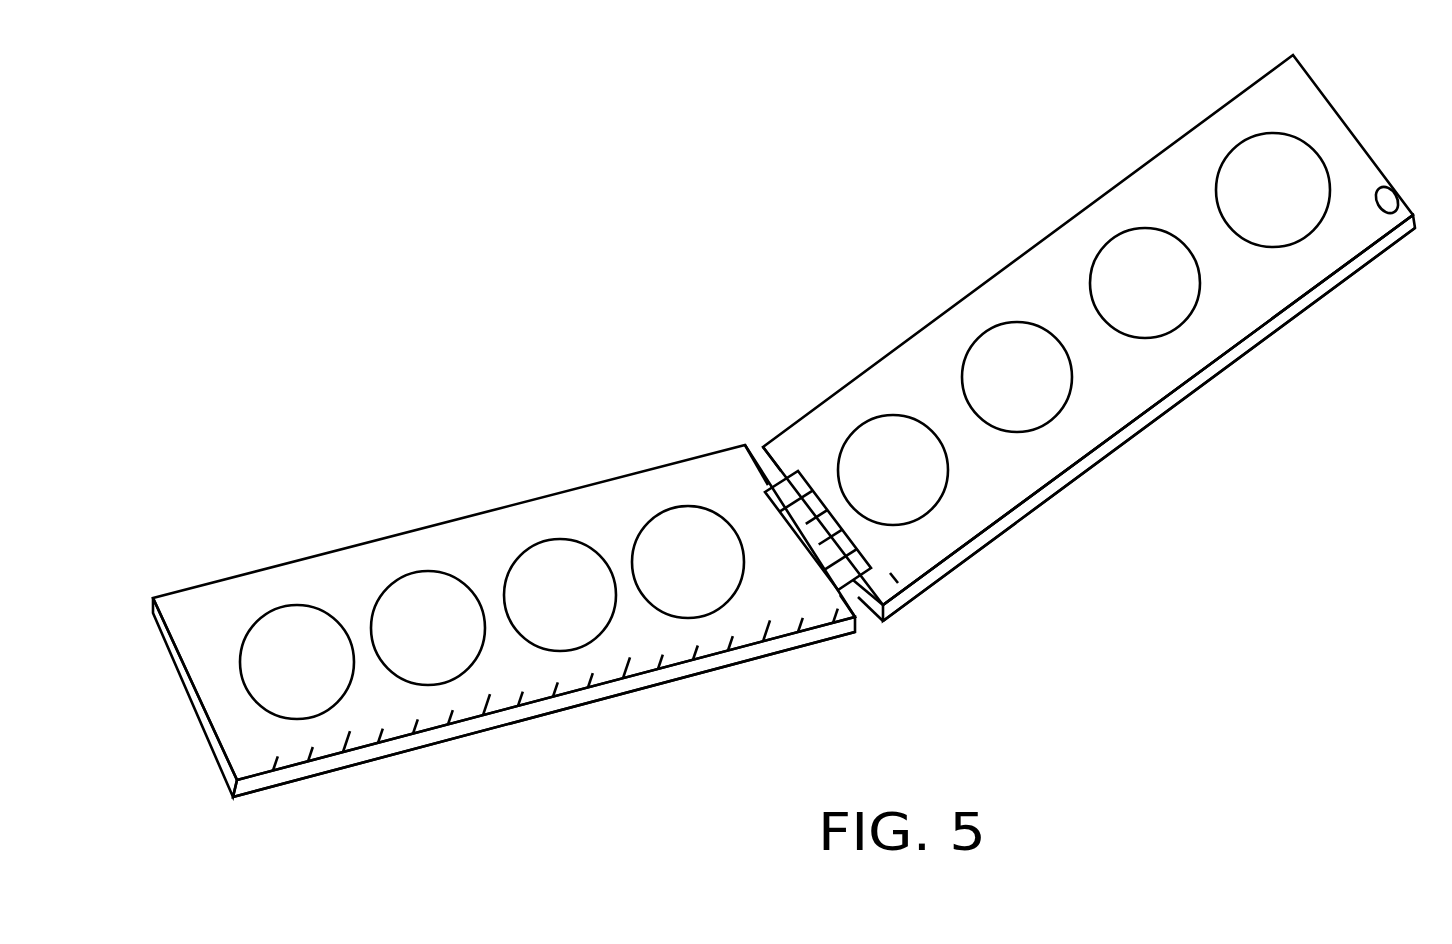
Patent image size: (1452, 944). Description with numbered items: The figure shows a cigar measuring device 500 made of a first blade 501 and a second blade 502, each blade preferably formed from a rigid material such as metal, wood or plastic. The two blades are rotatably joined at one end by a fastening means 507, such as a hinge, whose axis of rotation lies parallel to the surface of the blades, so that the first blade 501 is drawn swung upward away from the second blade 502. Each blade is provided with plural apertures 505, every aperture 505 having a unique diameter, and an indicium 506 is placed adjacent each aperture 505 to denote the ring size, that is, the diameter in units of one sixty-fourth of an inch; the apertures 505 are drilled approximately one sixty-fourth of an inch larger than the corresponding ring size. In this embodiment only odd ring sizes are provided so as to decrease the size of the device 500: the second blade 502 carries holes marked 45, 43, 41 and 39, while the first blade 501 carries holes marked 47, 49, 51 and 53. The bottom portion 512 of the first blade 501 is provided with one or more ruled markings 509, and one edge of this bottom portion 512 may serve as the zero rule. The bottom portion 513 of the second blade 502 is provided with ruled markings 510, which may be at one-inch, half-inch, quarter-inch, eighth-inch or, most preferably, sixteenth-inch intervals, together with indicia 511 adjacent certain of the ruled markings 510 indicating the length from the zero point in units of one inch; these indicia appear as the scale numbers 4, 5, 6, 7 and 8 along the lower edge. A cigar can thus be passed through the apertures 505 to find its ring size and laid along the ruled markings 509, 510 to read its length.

The cigar measuring device 500 is at (1423, 417).
The first blade 501 is at (1102, 338).
The second blade 502 is at (187, 606).
The apertures 505 is at (1074, 306).
The indicia 506 is at (492, 573).
The fastening means 507 is at (862, 627).
The ruled markings 509 is at (905, 558).
The ruled markings 510 is at (731, 649).
The indicia 511 is at (548, 723).
The bottom portion 513 is at (567, 712).
The bottom portion 512 is at (1177, 390).
The gauge hole size indicium 39 is at (688, 548).
The gauge hole size indicium 41 is at (560, 579).
The gauge hole size indicium 43 is at (428, 614).
The gauge hole size indicium 45 is at (297, 647).
The gauge hole size indicium 47 is at (883, 459).
The gauge hole size indicium 49 is at (1008, 367).
The gauge hole size indicium 51 is at (1136, 269).
The gauge hole size indicium 53 is at (1266, 176).
The scale graduation numeral 4 is at (884, 584).
The scale graduation numeral 5 is at (748, 626).
The scale graduation numeral 6 is at (613, 661).
The scale graduation numeral 7 is at (479, 696).
The scale graduation numeral 8 is at (352, 731).